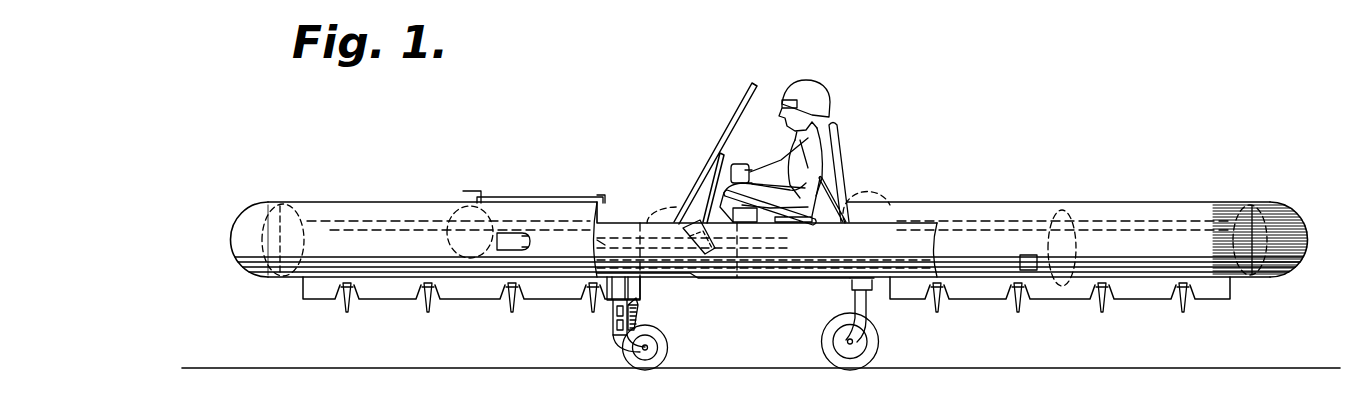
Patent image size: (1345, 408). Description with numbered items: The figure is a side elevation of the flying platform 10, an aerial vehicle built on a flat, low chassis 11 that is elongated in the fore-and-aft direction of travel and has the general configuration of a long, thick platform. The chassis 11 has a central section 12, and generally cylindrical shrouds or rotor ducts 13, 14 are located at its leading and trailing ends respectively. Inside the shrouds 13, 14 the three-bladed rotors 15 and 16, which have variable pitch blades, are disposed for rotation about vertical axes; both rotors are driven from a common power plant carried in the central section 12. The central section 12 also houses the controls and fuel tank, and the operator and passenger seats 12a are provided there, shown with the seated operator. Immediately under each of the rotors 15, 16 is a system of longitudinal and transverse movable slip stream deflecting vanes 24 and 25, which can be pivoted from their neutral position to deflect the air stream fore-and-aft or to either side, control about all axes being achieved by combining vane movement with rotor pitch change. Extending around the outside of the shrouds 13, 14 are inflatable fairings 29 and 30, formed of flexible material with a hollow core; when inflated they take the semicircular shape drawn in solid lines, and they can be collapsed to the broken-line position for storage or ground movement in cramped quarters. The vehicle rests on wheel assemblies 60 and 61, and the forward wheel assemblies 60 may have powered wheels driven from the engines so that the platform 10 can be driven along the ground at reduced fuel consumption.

The flying platform 10 is at (992, 175).
The chassis 11 is at (752, 277).
The central section 12 is at (715, 260).
The operator and passenger seats 12a is at (836, 156).
The shroud or rotor duct 13 is at (394, 203).
The shroud or rotor duct 14 is at (1133, 204).
The three-bladed rotor 15 is at (332, 220).
The three-bladed rotor 16 is at (1030, 214).
The longitudinal slip stream deflecting vanes 24 is at (472, 298).
The transverse slip stream deflecting vanes 25 is at (428, 303).
The inflatable fairing 29 is at (234, 257).
The inflatable fairing 30 is at (1268, 217).
The wheel assembly 60 is at (880, 348).
The wheel assembly 61 is at (668, 353).